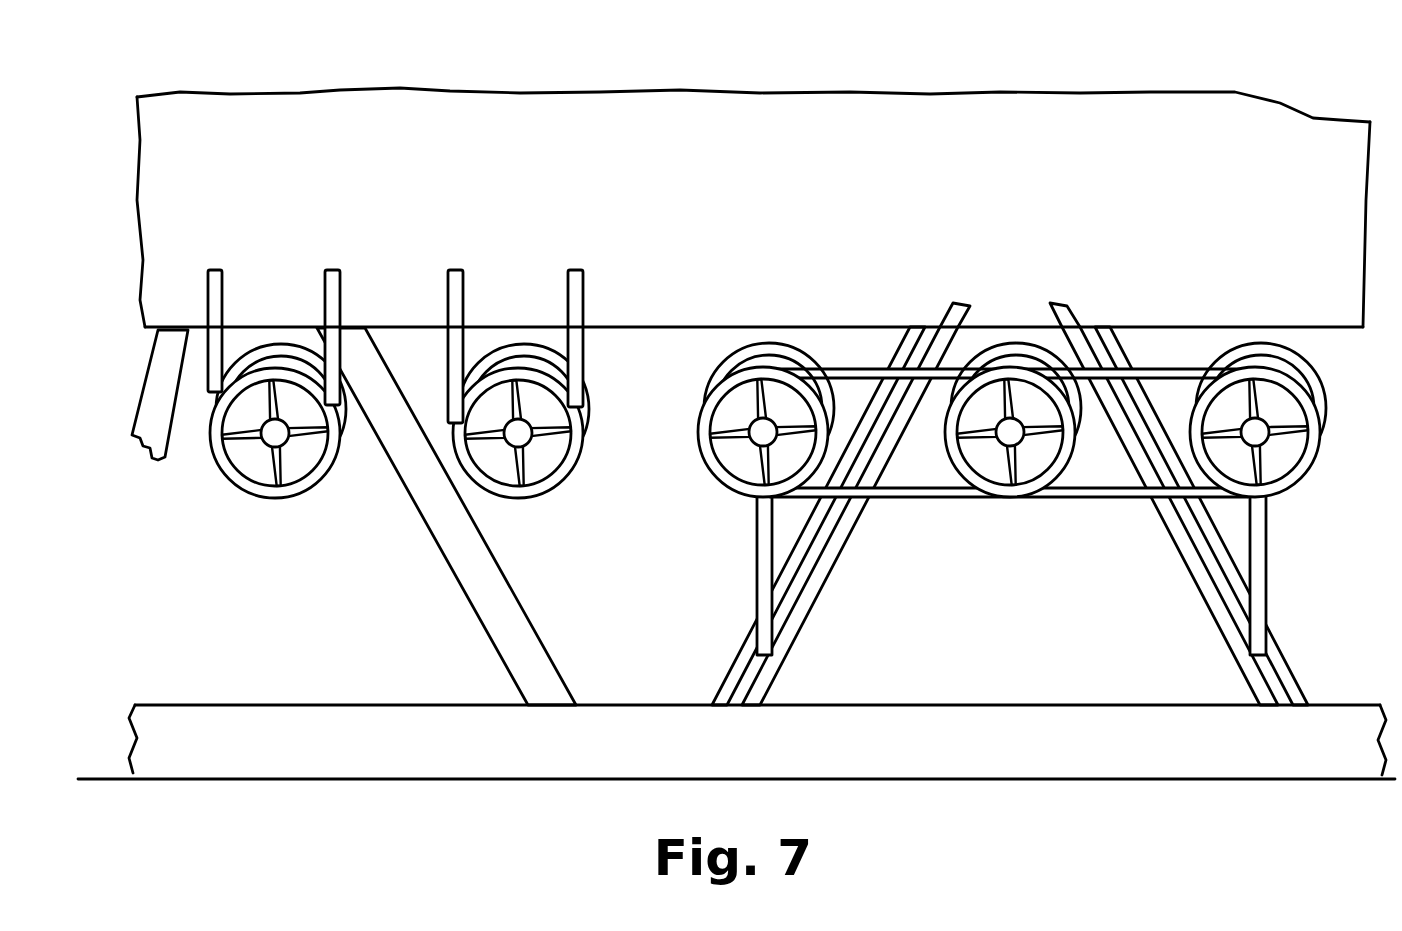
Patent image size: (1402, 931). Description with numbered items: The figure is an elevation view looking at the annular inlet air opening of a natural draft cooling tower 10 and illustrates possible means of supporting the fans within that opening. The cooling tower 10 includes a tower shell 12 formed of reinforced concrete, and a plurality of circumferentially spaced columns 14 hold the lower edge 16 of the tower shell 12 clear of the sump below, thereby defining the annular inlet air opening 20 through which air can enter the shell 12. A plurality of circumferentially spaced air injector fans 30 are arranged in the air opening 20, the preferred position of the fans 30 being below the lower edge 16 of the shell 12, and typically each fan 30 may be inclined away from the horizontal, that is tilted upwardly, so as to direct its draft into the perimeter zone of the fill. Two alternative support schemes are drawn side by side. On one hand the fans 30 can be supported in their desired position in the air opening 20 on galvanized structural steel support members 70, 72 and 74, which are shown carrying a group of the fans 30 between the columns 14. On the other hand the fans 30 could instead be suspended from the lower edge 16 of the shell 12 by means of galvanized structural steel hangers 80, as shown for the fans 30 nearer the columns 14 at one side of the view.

The natural draft cooling tower 10 is at (128, 150).
The tower shell 12 is at (683, 150).
The columns 14 is at (157, 375).
The lower edge 16 is at (682, 326).
The annular inlet air opening 20 is at (172, 560).
The air injector fans 30 is at (249, 357).
The support member 70 is at (822, 570).
The support member 72 is at (755, 558).
The support member 74 is at (857, 368).
The hangers 80 is at (204, 302).